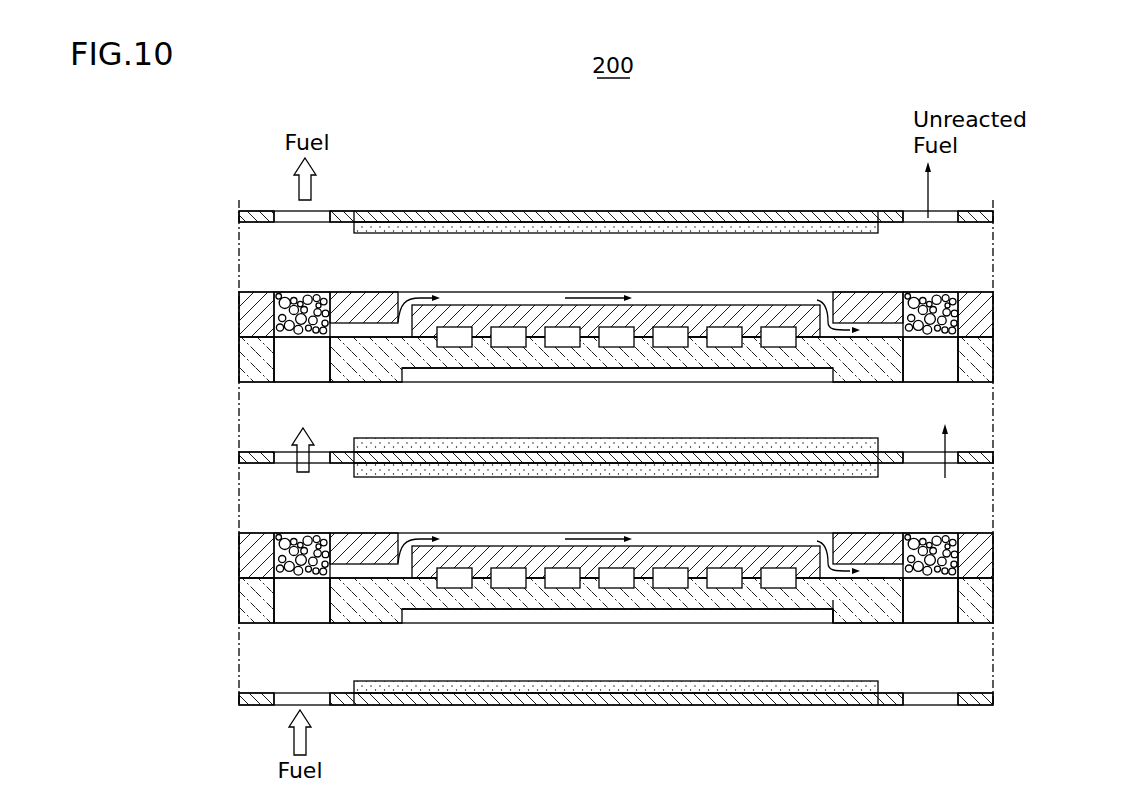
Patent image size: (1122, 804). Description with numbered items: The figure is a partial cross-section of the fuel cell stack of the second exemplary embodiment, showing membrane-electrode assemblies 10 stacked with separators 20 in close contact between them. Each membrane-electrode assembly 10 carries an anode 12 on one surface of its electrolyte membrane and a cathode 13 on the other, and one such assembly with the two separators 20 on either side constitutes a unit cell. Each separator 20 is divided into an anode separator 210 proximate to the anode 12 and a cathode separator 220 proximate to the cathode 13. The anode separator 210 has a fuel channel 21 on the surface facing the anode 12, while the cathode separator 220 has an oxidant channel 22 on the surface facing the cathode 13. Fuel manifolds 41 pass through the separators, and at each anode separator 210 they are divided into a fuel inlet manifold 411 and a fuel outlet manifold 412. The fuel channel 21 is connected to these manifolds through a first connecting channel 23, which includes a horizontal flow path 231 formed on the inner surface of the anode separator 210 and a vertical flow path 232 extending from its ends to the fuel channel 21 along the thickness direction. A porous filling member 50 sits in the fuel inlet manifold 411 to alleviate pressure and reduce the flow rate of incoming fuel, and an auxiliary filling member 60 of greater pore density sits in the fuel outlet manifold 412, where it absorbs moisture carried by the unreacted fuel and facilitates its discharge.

The membrane-electrode assembly 10 is at (230, 212).
The anode 12 is at (566, 227).
The cathode 13 is at (470, 446).
The separator 20 is at (1063, 292).
The fuel channel 21 is at (697, 298).
The oxidant channel 22 is at (790, 373).
The first connecting channel 23 is at (885, 752).
The horizontal flow path 231 is at (875, 571).
The vertical flow path 232 is at (830, 608).
The anode separator 210 is at (985, 305).
The cathode separator 220 is at (985, 357).
The fuel manifold 41 is at (283, 360).
The fuel inlet manifold 411 is at (283, 323).
The fuel outlet manifold 412 is at (945, 300).
The filling member 50 is at (318, 284).
The auxiliary filling member 60 is at (916, 284).